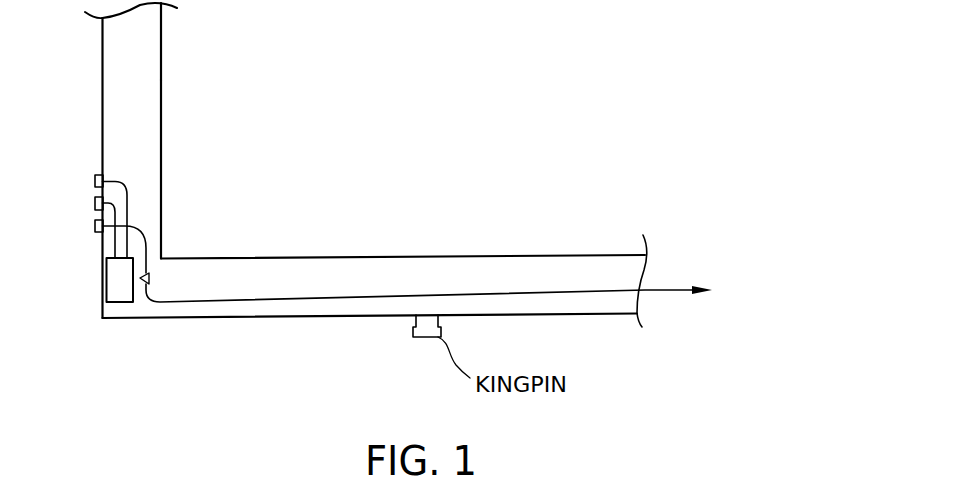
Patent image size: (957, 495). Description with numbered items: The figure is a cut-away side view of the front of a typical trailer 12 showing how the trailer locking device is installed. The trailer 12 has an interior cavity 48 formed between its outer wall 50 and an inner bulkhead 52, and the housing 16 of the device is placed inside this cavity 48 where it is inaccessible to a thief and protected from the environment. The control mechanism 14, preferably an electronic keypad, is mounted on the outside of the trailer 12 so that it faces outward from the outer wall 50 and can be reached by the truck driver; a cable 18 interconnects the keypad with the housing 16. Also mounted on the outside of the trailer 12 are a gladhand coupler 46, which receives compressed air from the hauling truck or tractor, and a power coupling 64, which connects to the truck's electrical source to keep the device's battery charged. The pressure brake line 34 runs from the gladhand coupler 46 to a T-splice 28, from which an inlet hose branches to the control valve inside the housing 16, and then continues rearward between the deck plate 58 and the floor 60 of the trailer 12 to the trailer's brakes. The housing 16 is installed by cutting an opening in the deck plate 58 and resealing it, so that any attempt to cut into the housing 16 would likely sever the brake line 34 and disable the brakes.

The trailer 12 is at (163, 53).
The control mechanism 14 is at (97, 182).
The housing 16 is at (117, 277).
The cable 18 is at (130, 182).
The T-splice 28 is at (157, 278).
The pressure brake line 34 is at (143, 233).
The gladhand coupler 46 is at (97, 228).
The interior cavity 48 is at (127, 83).
The outer wall 50 is at (102, 102).
The inner bulkhead 52 is at (161, 115).
The deck plate 58 is at (253, 320).
The floor 60 is at (377, 257).
The power coupling 64 is at (97, 203).